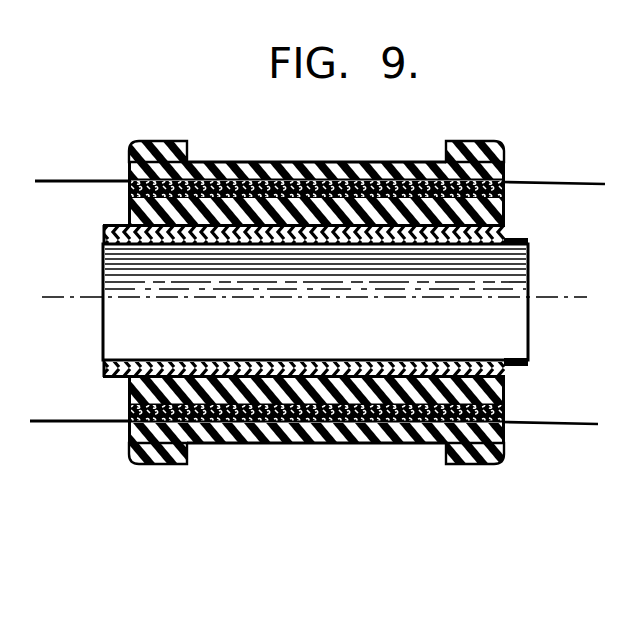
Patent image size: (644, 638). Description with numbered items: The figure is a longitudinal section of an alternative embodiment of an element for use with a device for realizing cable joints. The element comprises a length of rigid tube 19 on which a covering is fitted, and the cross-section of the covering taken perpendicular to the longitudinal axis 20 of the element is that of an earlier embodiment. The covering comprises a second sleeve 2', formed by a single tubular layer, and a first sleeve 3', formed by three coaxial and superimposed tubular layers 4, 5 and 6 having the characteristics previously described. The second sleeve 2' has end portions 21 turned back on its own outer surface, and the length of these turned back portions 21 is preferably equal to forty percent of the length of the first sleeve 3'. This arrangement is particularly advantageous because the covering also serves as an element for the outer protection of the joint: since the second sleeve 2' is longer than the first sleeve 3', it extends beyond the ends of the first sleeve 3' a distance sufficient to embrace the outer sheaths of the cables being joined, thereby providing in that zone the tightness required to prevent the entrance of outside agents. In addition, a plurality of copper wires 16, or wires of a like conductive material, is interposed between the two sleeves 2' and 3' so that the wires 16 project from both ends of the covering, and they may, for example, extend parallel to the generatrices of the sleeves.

The copper wires 16 is at (50, 180).
The first sleeve 3' is at (301, 307).
The rigid tube 19 is at (107, 235).
The longitudinal axis 20 is at (72, 297).
The end portions 21 is at (163, 142).
The second sleeve 2' is at (316, 283).
The tubular layer 4 is at (278, 221).
The tubular layer 5 is at (314, 208).
The tubular layer 6 is at (372, 168).